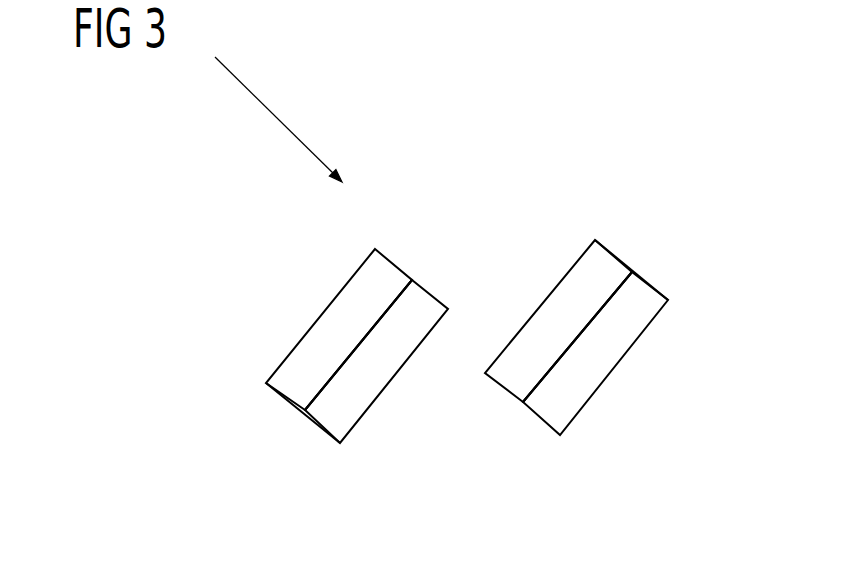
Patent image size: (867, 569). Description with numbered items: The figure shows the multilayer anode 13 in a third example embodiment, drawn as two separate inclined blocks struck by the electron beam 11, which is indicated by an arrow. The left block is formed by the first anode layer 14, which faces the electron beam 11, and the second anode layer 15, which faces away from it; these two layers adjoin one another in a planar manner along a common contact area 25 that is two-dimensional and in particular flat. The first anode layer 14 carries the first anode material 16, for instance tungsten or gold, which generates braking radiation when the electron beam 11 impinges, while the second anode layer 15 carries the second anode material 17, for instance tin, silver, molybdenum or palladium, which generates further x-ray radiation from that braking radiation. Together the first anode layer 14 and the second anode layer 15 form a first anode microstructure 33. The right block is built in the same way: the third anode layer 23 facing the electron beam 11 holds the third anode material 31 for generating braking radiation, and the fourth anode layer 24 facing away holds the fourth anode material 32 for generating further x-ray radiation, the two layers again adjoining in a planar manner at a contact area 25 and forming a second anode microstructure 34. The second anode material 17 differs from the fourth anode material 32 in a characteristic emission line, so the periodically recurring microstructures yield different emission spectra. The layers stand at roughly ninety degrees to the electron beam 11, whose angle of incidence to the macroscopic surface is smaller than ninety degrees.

The electron beam 11 is at (270, 110).
The multilayer anode 13 is at (454, 329).
The first anode layer 14 is at (327, 318).
The second anode layer 15 is at (398, 326).
The first anode material 16 is at (362, 282).
The second anode material 17 is at (425, 300).
The third anode layer 23 is at (579, 286).
The fourth anode layer 24 is at (633, 353).
The contact area 25 is at (345, 361).
The third anode material 31 is at (607, 263).
The fourth anode material 32 is at (617, 338).
The first anode microstructure 33 is at (285, 398).
The second anode microstructure 34 is at (650, 285).